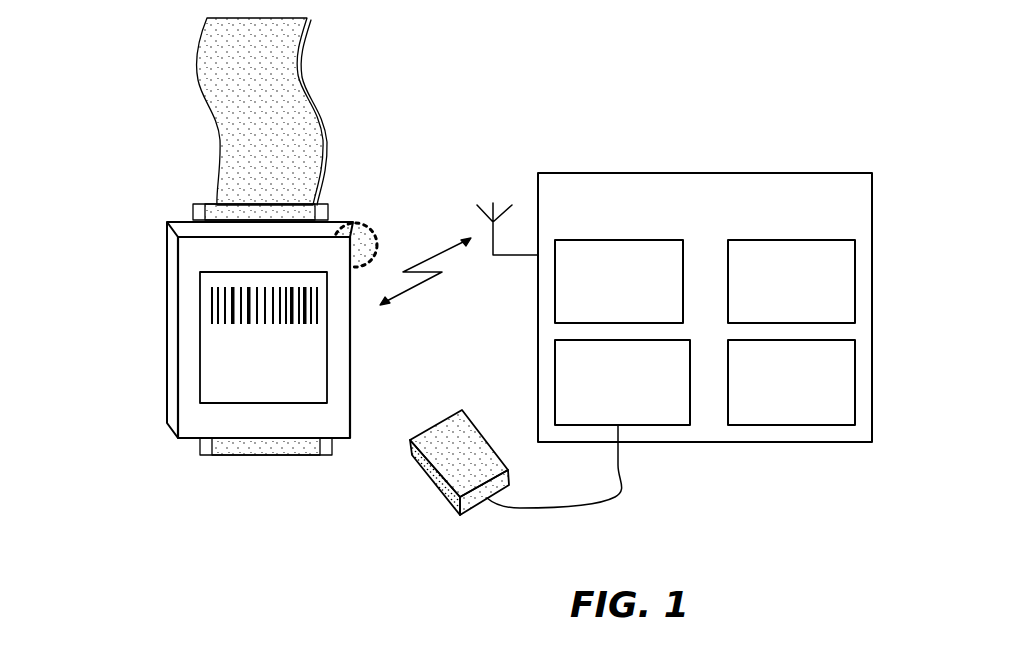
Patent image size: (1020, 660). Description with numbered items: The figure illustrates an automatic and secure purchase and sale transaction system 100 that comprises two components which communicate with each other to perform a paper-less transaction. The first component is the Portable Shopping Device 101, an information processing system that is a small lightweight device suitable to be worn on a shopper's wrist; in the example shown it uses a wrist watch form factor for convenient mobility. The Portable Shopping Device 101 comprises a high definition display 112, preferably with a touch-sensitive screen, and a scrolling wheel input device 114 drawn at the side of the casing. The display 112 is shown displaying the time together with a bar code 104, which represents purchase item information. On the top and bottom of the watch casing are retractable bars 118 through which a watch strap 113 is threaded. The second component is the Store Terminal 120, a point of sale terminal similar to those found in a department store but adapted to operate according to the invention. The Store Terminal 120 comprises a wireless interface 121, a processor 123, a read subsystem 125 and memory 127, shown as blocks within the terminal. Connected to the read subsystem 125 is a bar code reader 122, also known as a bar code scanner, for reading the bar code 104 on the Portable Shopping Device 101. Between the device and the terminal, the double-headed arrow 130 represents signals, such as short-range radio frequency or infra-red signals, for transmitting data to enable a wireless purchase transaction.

The sales transaction system 100 is at (763, 21).
The Portable Shopping Device 101 is at (165, 290).
The bar code 104 is at (312, 306).
The display 112 is at (212, 342).
The watch strap 113 is at (311, 110).
The scrolling wheel input device 114 is at (362, 222).
The retractable bars 118 is at (193, 212).
The Store Terminal 120 is at (747, 173).
The wireless interface 121 is at (619, 281).
The bar code reader 122 is at (435, 492).
The processor 123 is at (791, 281).
The read subsystem 125 is at (622, 382).
The memory 127 is at (791, 382).
The double-headed arrow 130 is at (448, 273).